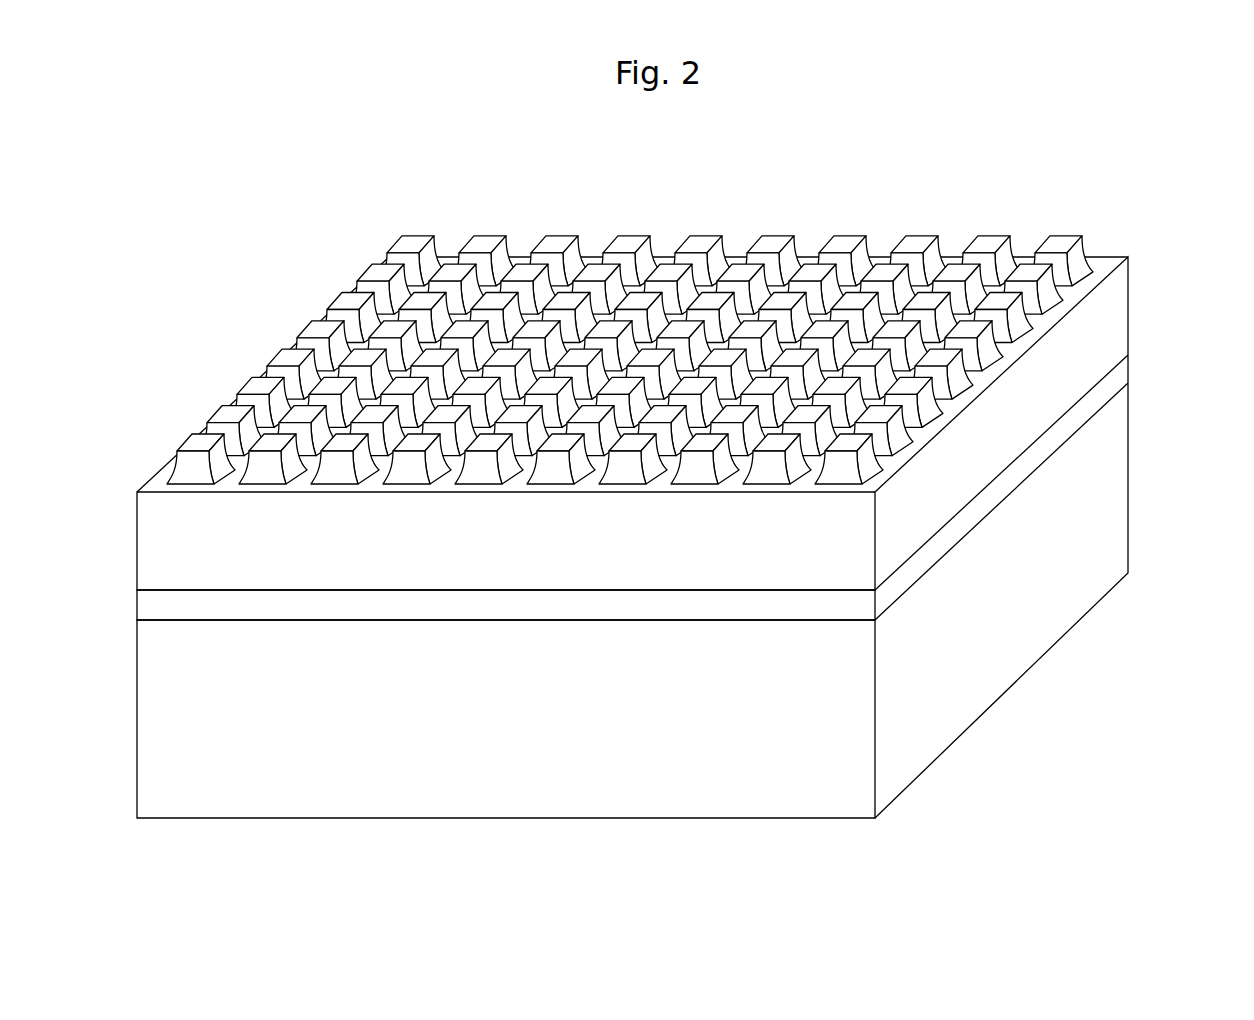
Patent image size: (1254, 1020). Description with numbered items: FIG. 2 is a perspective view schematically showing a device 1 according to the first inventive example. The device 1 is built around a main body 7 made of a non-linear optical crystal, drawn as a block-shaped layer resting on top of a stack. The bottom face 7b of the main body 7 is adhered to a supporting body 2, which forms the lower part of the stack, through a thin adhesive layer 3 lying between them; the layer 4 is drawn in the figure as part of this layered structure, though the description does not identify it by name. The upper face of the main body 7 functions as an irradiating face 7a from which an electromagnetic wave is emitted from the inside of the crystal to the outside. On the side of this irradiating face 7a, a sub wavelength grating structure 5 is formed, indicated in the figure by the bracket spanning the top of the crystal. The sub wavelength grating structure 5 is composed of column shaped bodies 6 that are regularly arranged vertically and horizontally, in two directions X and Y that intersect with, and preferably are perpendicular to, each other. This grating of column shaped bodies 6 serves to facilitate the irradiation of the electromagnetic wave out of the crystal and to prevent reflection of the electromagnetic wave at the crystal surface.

The device 1 is at (1088, 215).
The supporting body 2 is at (1116, 497).
The adhesive layer 3 is at (1116, 376).
The surface layer 4 is at (1116, 322).
The sub wavelength grating structure 5 is at (1075, 195).
The column shaped bodies 6 is at (400, 233).
The main body 7 is at (1157, 263).
The irradiating face 7a is at (1098, 268).
The bottom face 7b is at (1042, 436).